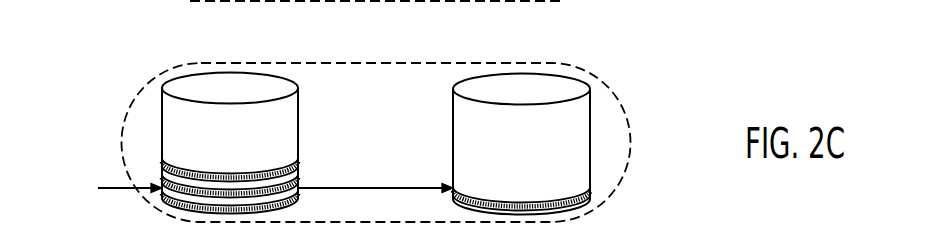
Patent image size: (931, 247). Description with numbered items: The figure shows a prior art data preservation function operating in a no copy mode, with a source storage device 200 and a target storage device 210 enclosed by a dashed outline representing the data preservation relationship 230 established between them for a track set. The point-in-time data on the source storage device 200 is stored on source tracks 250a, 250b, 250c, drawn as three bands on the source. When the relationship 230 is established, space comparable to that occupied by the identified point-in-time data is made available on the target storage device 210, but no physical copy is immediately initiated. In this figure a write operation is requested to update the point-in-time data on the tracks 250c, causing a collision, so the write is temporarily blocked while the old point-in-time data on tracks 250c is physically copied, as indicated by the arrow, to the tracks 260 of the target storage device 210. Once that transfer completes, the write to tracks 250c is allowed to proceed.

The source storage device 200 is at (185, 128).
The target storage device 210 is at (567, 129).
The data preservation relationship 230 is at (611, 84).
The source tracks 250a is at (162, 158).
The source tracks 250b is at (162, 174).
The source tracks 250c is at (162, 190).
The target storage device tracks 260 is at (590, 190).